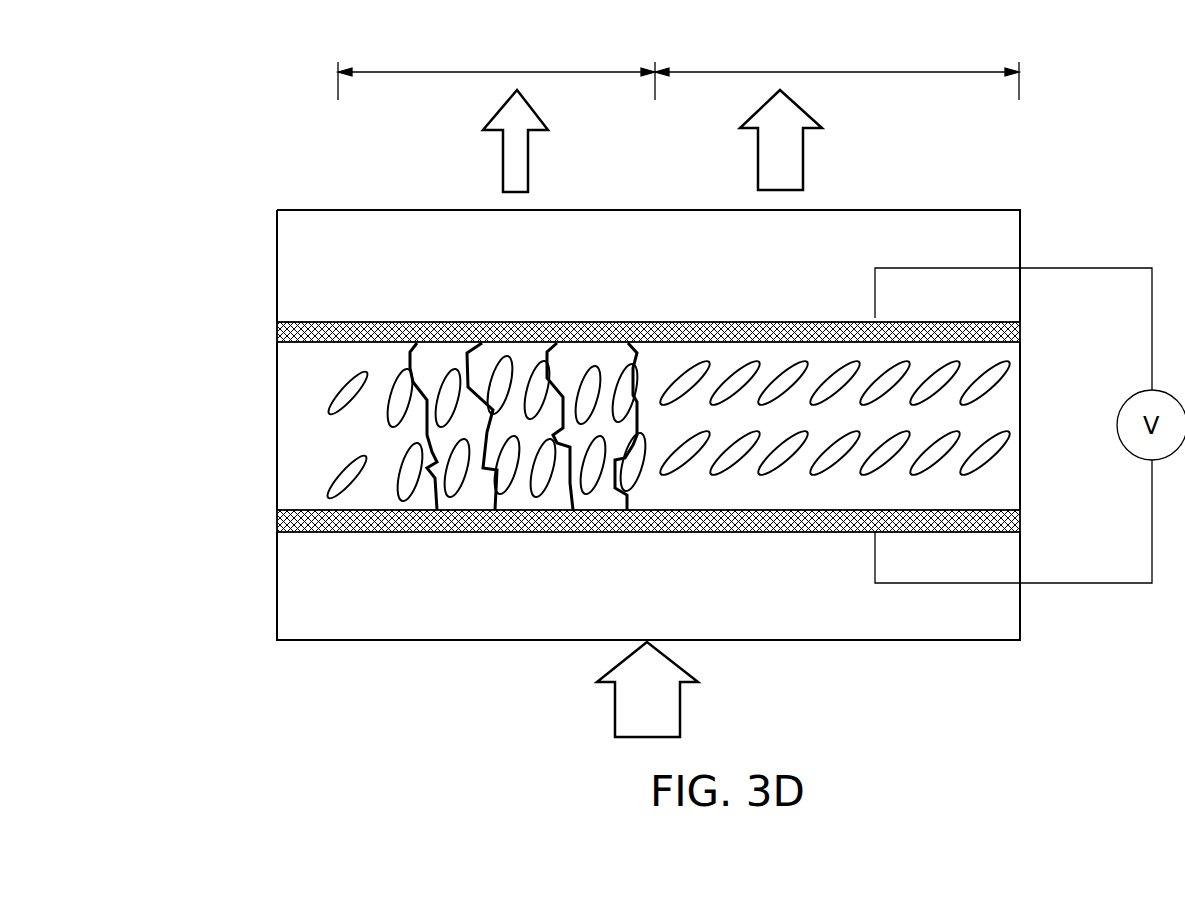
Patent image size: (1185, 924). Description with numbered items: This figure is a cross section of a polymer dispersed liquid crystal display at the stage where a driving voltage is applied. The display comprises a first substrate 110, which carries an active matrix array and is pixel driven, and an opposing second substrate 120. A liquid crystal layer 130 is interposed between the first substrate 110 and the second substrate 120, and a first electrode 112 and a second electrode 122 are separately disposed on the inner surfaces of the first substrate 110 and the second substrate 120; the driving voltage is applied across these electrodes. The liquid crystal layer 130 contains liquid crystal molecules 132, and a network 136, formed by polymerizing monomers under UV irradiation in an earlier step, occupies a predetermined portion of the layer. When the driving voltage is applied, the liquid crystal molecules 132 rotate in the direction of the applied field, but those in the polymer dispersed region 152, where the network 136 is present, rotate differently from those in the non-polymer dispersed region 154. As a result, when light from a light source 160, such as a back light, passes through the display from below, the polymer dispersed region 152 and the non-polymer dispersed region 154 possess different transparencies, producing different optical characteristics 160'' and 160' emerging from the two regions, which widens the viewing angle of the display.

The first substrate 110 is at (298, 594).
The first electrode 112 is at (277, 517).
The second substrate 120 is at (300, 268).
The second electrode 122 is at (277, 333).
The liquid crystal layer 130 is at (300, 443).
The liquid crystal molecules 132 is at (338, 475).
The network 136 is at (412, 355).
The polymer dispersed region 152 is at (496, 70).
The non-polymer dispersed region 154 is at (837, 70).
The light source 160 is at (603, 689).
The optical characteristic 160' is at (732, 140).
The optical characteristic 160'' is at (465, 141).